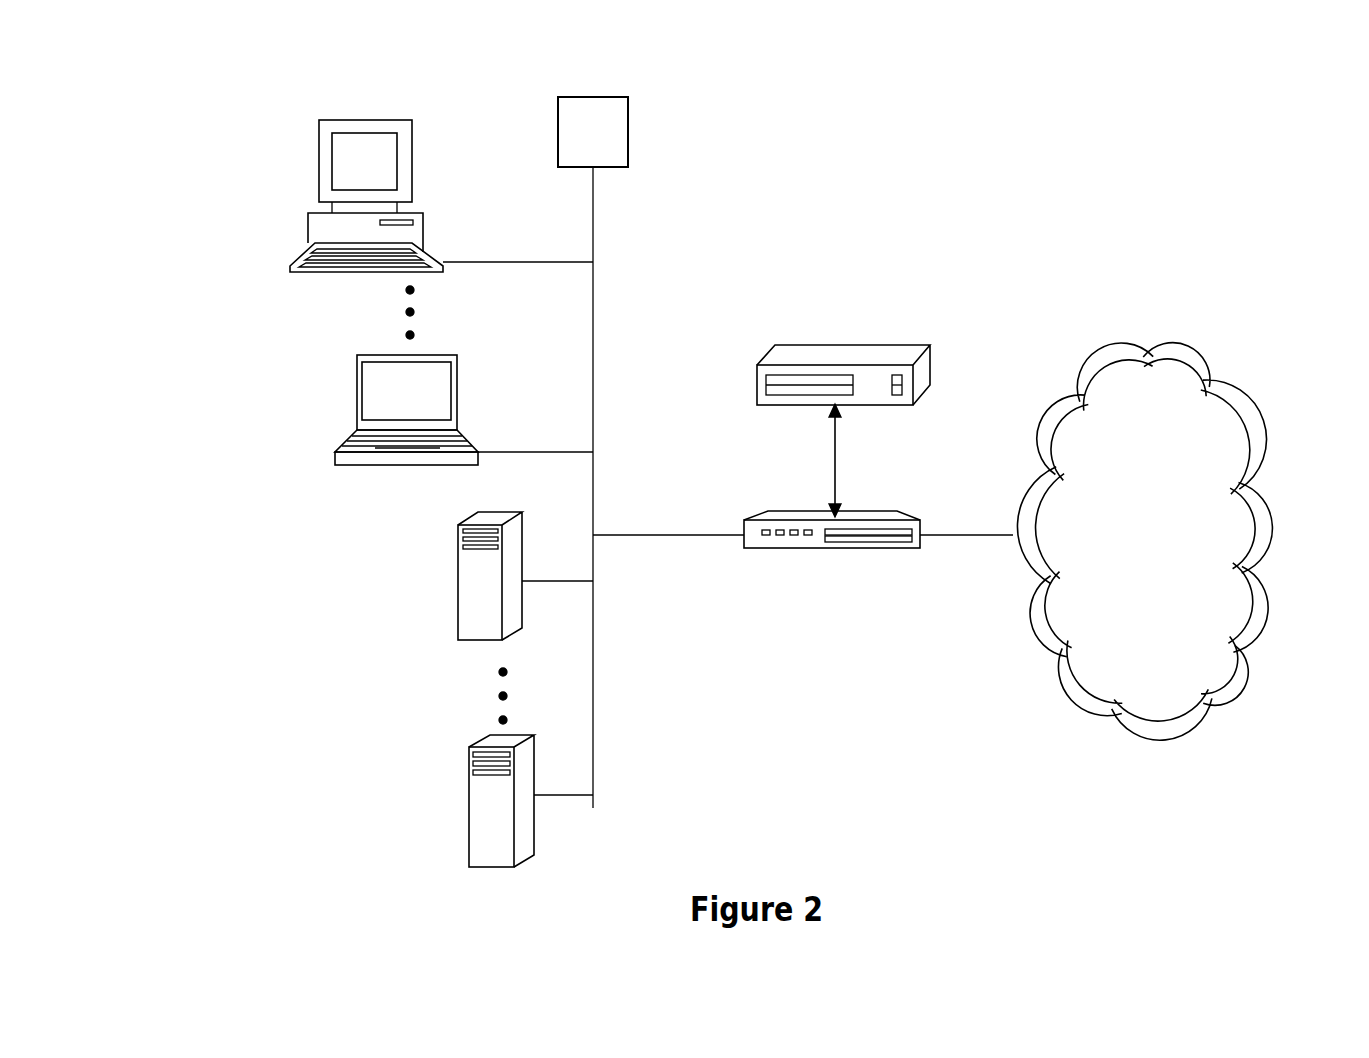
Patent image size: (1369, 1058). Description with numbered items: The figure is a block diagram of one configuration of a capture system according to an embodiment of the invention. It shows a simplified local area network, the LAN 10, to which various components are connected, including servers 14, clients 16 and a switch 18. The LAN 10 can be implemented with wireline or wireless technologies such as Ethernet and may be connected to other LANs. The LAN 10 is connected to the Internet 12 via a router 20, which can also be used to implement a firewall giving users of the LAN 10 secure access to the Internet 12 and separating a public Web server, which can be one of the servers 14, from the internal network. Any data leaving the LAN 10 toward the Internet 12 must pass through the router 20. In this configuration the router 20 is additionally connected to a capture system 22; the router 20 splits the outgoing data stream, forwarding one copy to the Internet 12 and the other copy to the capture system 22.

The local area network (LAN) 10 is at (466, 487).
The Internet 12 is at (1144, 541).
The servers 14 is at (441, 604).
The clients 16 is at (288, 238).
The switch 18 is at (604, 86).
The router 20 is at (832, 558).
The capture system 22 is at (850, 334).